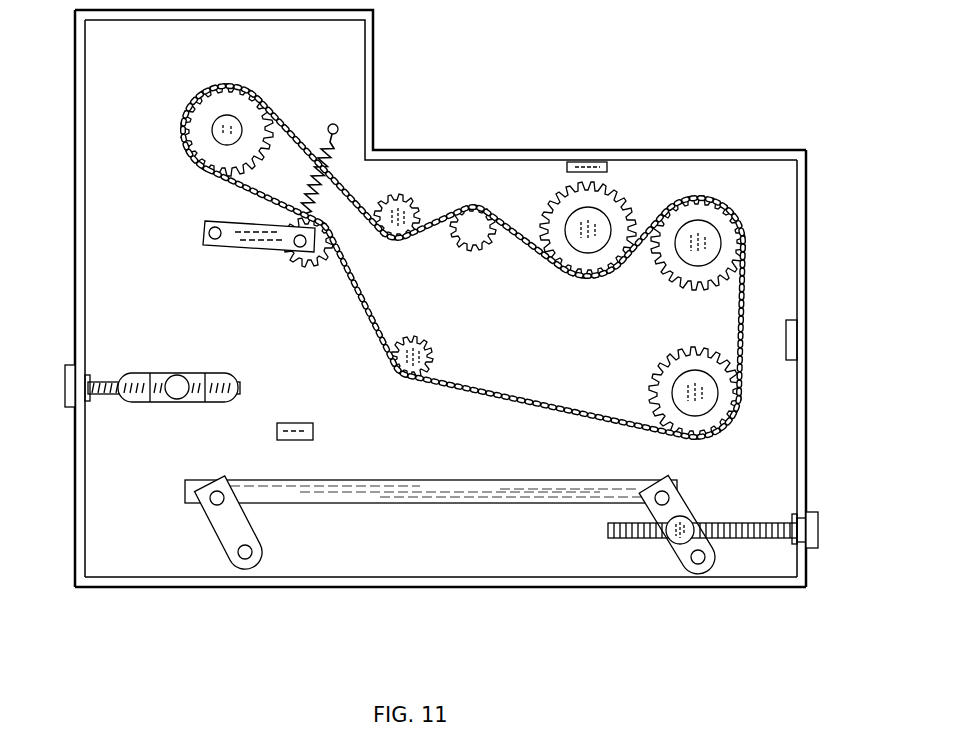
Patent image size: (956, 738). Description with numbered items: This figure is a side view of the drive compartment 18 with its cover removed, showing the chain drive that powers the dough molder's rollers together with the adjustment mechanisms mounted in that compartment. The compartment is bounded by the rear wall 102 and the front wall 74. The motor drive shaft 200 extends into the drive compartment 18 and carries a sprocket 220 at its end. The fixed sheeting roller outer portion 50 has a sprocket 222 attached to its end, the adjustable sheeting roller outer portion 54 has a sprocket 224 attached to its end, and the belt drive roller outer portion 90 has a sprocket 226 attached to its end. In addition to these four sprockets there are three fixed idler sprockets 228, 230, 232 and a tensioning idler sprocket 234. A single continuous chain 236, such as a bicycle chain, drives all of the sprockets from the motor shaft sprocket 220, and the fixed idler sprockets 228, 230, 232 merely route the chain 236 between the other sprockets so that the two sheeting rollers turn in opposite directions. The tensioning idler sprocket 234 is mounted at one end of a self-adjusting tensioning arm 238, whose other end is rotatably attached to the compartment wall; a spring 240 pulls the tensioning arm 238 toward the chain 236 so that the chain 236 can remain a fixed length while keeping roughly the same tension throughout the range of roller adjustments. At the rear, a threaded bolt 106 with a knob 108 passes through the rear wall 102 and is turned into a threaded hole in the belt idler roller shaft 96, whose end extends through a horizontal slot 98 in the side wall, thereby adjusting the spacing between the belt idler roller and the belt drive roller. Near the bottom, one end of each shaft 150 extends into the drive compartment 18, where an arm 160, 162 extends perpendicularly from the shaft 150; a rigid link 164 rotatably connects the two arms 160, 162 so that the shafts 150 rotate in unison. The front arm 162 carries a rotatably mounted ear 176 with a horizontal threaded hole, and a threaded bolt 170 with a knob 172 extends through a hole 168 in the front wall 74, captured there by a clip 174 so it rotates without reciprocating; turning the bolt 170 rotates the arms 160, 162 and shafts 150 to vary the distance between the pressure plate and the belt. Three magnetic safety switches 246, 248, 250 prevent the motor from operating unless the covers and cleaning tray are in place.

The drive compartment 18 is at (94, 282).
The rear wall 102 is at (76, 152).
The front wall 74 is at (806, 248).
The motor drive shaft 200 is at (224, 114).
The sprocket 220 is at (195, 104).
The spring 240 is at (308, 193).
The tensioning arm 238 is at (240, 250).
The tensioning idler sprocket 234 is at (303, 268).
The fixed idler sprocket 228 is at (406, 206).
The fixed idler sprocket 230 is at (476, 251).
The magnetic safety switch 248 is at (568, 172).
The sprocket 224 is at (611, 195).
The outer portion 54 is at (606, 222).
The sprocket 222 is at (662, 264).
The outer portion 50 is at (696, 266).
The magnetic safety switch 250 is at (786, 332).
The chain 236 is at (376, 318).
The fixed idler sprocket 232 is at (430, 348).
The outer portion 90 is at (672, 378).
The sprocket 226 is at (658, 392).
The horizontal slot 98 is at (220, 373).
The shaft 96 is at (184, 398).
The threaded bolt 106 is at (106, 396).
The knob 108 is at (64, 382).
The magnetic safety switch 246 is at (313, 431).
The rigid link 164 is at (425, 504).
The arm 160 is at (210, 537).
The shaft 150 is at (253, 553).
The front arm 162 is at (668, 556).
The ear 176 is at (688, 522).
The threaded bolt 170 is at (733, 540).
The clip 174 is at (794, 520).
The hole 168 is at (802, 520).
The knob 172 is at (818, 530).